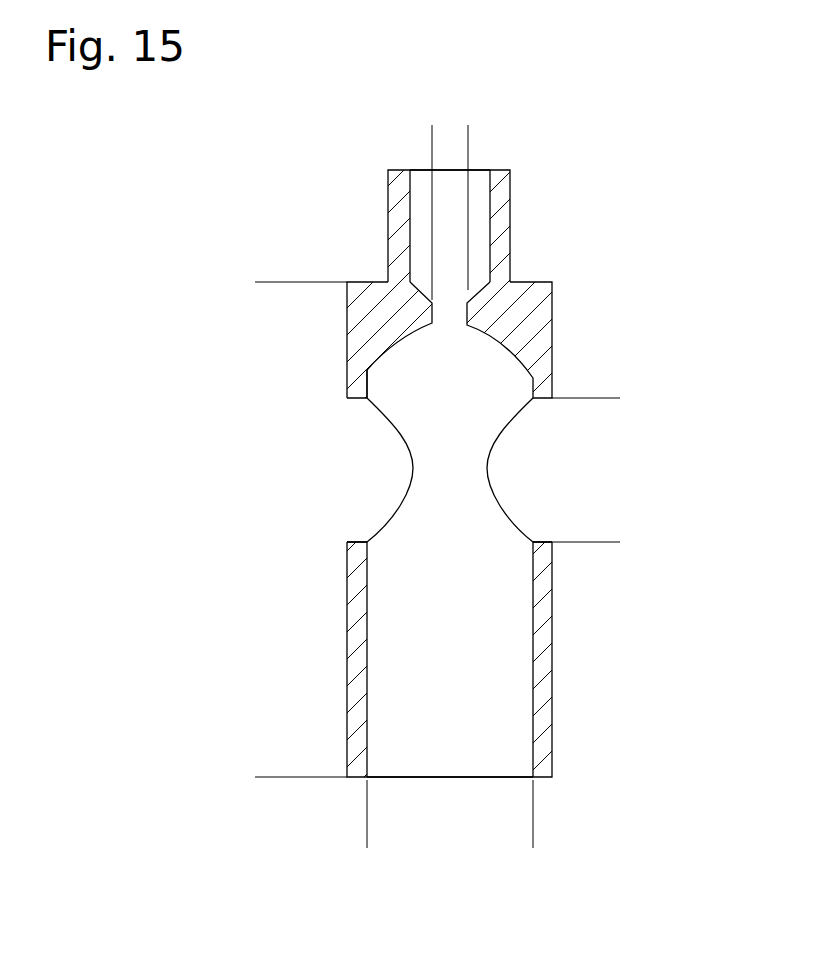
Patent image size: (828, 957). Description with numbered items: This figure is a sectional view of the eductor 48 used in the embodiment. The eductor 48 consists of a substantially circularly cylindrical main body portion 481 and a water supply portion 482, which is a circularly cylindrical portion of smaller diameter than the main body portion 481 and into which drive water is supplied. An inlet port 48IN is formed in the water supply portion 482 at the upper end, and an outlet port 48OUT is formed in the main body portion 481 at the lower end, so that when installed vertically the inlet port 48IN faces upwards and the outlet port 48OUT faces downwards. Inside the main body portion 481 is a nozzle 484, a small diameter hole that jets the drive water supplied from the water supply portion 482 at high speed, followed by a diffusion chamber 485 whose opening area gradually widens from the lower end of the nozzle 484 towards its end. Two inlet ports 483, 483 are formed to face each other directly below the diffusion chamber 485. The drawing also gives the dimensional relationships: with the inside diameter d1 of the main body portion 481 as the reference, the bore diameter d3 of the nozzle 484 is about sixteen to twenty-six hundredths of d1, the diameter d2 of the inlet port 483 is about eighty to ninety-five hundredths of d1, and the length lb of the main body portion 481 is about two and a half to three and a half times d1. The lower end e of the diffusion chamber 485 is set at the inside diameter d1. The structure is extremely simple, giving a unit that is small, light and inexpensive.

The eductor 48 is at (414, 476).
The main body portion 481 is at (552, 672).
The water supply portion 482 is at (510, 216).
The inlet port 483 is at (357, 540).
The nozzle 484 is at (448, 315).
The diffusion chamber 485 is at (448, 362).
The inlet port 48IN is at (477, 172).
The outlet port 48OUT is at (503, 778).
The inside diameter of the main body portion d1 is at (523, 835).
The diameter of the inlet port d2 is at (608, 408).
The bore diameter of the nozzle d3 is at (500, 135).
The length of the main body portion lb is at (265, 767).
The lower end of the diffusion chamber e is at (367, 370).